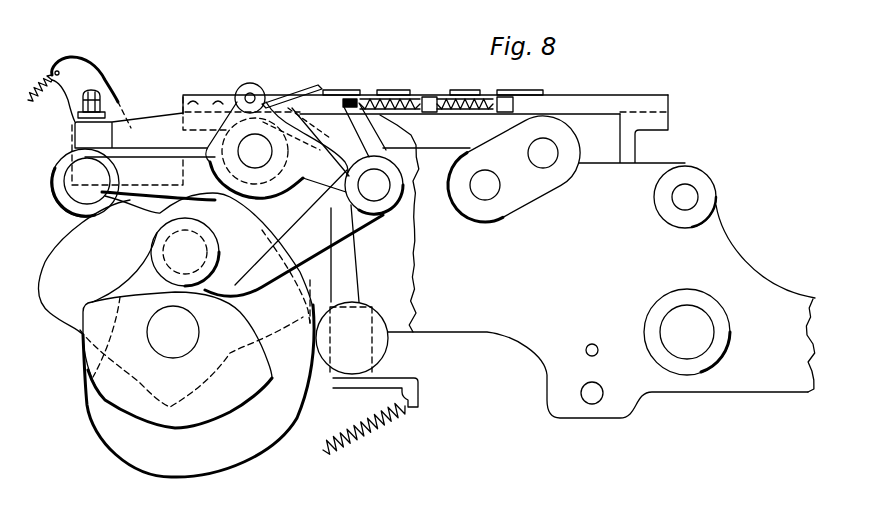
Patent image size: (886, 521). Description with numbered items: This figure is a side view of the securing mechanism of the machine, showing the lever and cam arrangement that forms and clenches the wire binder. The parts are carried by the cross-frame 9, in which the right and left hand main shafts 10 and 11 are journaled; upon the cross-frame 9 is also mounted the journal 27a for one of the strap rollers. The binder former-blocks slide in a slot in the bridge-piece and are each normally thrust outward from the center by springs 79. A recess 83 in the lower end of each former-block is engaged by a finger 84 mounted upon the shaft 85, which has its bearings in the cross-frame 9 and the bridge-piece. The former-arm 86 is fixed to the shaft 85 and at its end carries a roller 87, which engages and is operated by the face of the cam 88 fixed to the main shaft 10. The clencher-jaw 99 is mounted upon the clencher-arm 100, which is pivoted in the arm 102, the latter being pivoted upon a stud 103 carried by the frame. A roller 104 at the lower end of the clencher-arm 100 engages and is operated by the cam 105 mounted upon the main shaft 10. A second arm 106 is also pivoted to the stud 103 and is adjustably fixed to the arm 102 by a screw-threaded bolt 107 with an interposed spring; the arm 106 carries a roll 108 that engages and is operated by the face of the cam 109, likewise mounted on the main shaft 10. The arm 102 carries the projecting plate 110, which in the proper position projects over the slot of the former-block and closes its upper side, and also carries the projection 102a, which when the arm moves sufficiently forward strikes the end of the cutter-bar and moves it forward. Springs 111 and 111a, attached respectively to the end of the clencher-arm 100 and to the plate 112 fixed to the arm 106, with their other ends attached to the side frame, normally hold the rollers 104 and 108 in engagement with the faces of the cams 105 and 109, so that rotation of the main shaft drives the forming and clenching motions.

The cross-frame 9 is at (597, 256).
The left-hand main shaft 10 is at (173, 332).
The right-hand main shaft 11 is at (687, 332).
The journal 27a is at (543, 156).
The spring 79 is at (413, 100).
The recess 83 is at (348, 98).
The finger 84 is at (358, 127).
The shaft 85 is at (483, 228).
The former-arm 86 is at (294, 233).
The roller 87 is at (197, 232).
The cam 88 is at (510, 107).
The clencher-jaw 99 is at (292, 108).
The clencher-arm 100 is at (343, 267).
The arm 102 is at (145, 135).
The projection 102a is at (253, 93).
The stud 103 is at (277, 150).
The roller 104 is at (352, 338).
The cam 105 is at (250, 334).
The arm 106 is at (149, 141).
The screw-threaded bolt 107 is at (102, 103).
The roll 108 is at (53, 193).
The cam 109 is at (97, 267).
The projecting plate 110 is at (270, 96).
The spring 111 is at (388, 430).
The spring 111a is at (50, 77).
The plate 112 is at (72, 112).